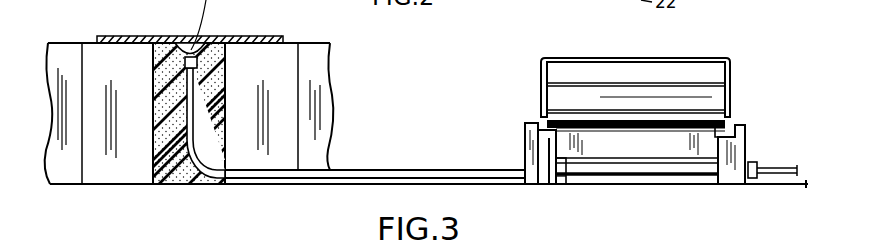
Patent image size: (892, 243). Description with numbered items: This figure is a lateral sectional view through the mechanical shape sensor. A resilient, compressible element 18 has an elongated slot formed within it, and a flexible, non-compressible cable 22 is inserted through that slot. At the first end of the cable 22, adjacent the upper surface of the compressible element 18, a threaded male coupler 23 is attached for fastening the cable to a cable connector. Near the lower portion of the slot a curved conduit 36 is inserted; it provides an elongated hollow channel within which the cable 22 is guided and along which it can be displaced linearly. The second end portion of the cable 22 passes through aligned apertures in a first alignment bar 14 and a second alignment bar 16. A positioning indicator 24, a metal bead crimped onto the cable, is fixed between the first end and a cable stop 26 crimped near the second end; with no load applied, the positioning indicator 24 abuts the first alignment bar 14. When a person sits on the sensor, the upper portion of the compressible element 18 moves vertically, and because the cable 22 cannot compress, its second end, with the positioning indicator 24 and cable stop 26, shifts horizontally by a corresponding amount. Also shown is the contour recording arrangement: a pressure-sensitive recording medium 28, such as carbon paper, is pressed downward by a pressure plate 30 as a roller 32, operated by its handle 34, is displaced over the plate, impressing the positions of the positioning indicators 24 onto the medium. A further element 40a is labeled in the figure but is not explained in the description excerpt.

The first alignment bar 14 is at (528, 183).
The second alignment bar 16 is at (737, 178).
The resilient, compressible element 18 is at (165, 62).
The cable 22 is at (636, 176).
The threaded male coupler 23 is at (198, 60).
The positioning indicator 24 is at (562, 182).
The cable stop 26 is at (757, 160).
The recording medium 28 is at (580, 165).
The pressure plate 30 is at (682, 147).
The roller 32 is at (722, 94).
The handle 34 is at (596, 58).
The curved conduit 36 is at (380, 170).
The fastener 40a is at (130, 238).